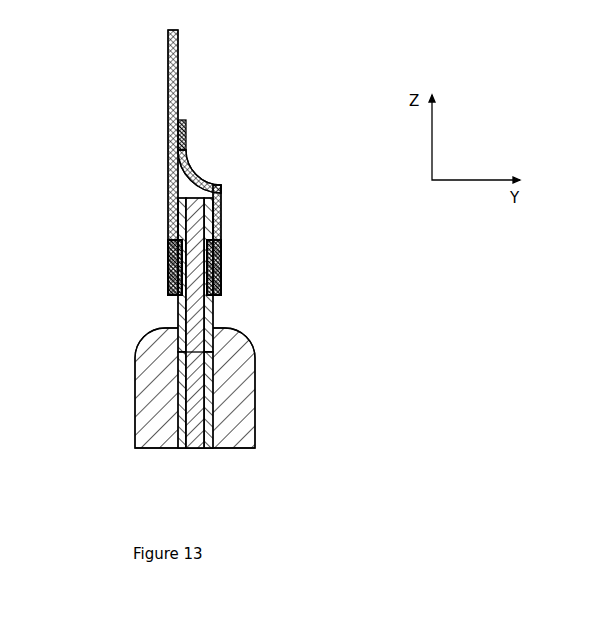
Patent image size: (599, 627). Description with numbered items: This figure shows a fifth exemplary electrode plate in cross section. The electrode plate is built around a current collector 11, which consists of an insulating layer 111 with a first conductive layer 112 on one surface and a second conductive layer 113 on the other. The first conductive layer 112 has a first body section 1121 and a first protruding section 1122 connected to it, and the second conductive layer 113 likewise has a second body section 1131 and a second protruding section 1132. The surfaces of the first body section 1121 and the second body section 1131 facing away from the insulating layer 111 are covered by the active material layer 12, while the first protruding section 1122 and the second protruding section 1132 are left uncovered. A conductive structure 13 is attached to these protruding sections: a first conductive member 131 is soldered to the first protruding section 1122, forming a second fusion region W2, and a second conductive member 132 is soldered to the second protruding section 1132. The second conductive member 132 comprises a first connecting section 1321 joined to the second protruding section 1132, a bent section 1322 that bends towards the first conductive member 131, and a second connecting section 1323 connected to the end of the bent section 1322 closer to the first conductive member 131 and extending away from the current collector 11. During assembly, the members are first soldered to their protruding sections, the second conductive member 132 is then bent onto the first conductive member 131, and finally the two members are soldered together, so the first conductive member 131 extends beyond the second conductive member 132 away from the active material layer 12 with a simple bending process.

The current collector 11 is at (195, 352).
The insulating layer 111 is at (195, 449).
The first conductive layer 112 is at (114, 323).
The first body section 1121 is at (186, 352).
The first protruding section 1122 is at (178, 312).
The second conductive layer 113 is at (276, 323).
The second body section 1131 is at (204, 352).
The second protruding section 1132 is at (213, 312).
The active material layer 12 is at (134, 422).
The conductive structure 13 is at (236, 162).
The first conductive member 131 is at (168, 100).
The second conductive member 132 is at (268, 204).
The first connecting section 1321 is at (222, 215).
The bent section 1322 is at (205, 182).
The second connecting section 1323 is at (186, 135).
The second fusion region W2 is at (168, 262).